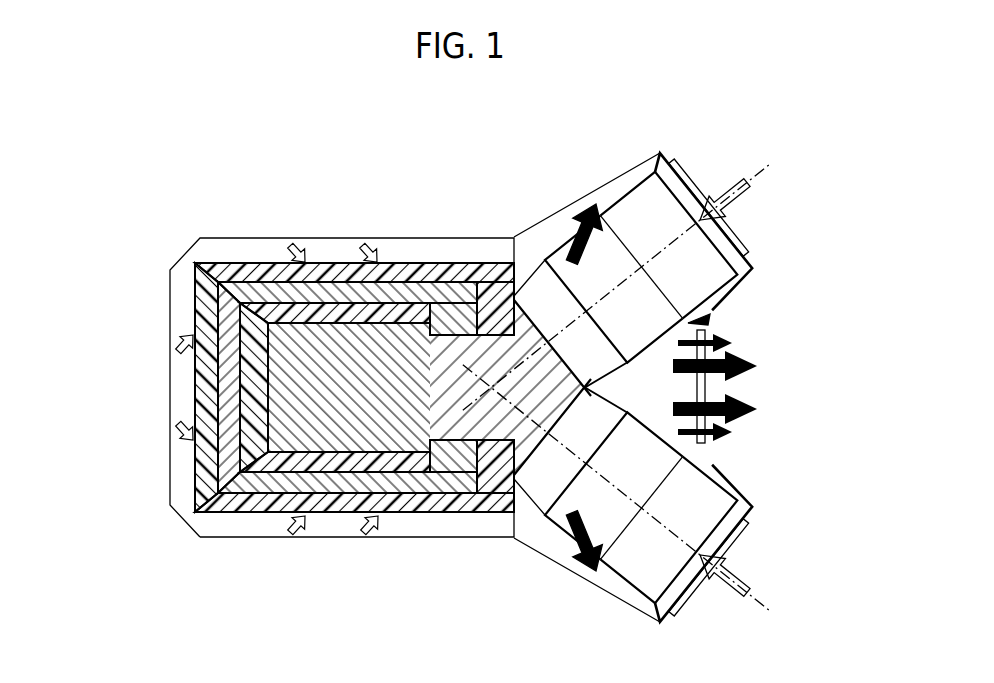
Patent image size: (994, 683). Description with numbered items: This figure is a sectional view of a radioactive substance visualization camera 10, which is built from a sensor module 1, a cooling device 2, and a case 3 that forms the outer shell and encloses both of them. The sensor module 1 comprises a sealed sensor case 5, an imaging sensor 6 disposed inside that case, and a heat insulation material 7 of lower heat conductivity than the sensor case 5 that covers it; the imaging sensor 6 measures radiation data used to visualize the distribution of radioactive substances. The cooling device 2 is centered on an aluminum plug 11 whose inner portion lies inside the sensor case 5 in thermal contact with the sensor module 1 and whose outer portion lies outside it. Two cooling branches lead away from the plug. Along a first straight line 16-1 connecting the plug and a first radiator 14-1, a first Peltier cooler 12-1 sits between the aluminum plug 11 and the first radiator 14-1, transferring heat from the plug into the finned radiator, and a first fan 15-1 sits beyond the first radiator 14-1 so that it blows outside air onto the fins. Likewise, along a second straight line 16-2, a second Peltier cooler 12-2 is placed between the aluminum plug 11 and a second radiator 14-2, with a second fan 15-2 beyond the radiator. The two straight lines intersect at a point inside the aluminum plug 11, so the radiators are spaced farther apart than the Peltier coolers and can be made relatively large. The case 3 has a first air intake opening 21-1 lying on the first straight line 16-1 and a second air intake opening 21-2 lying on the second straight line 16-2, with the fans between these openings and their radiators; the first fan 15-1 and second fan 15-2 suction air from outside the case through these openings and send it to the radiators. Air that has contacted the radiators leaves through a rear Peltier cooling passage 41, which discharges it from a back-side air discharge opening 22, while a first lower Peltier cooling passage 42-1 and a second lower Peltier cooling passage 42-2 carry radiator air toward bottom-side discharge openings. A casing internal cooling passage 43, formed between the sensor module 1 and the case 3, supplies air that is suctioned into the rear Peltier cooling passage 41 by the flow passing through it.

The sensor module 1 is at (442, 244).
The cooling device 2 is at (710, 318).
The case 3 is at (170, 318).
The sensor case 5 is at (228, 292).
The imaging sensor 6 is at (328, 343).
The heat insulation material 7 is at (401, 273).
The radioactive substance visualization camera 10 is at (428, 160).
The aluminum plug 11 is at (560, 372).
The first Peltier cooler 12-1 is at (538, 297).
The second Peltier cooler 12-2 is at (538, 478).
The first radiator 14-1 is at (563, 258).
The second radiator 14-2 is at (565, 515).
The first fan 15-1 is at (648, 188).
The second fan 15-2 is at (650, 580).
The first straight line 16-1 is at (753, 172).
The second straight line 16-2 is at (762, 600).
The first air intake opening 21-1 is at (738, 235).
The second air intake opening 21-2 is at (692, 578).
The back-side air discharge opening 22 is at (705, 443).
The rear Peltier cooling passage 41 is at (677, 388).
The first lower Peltier cooling passage 42-1 is at (597, 200).
The second lower Peltier cooling passage 42-2 is at (583, 565).
The casing internal cooling passage 43 is at (416, 538).